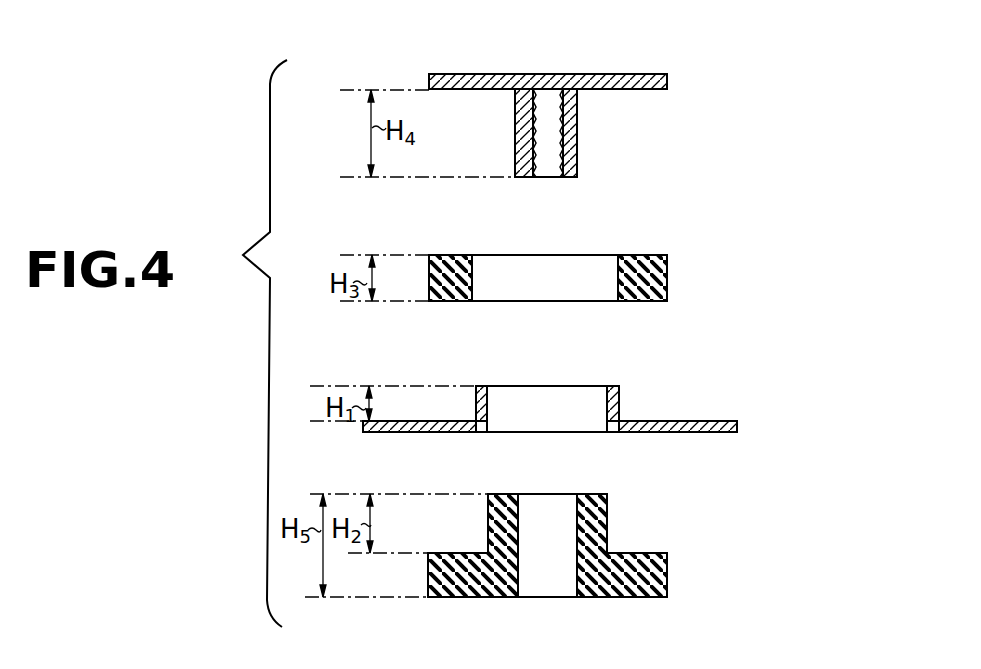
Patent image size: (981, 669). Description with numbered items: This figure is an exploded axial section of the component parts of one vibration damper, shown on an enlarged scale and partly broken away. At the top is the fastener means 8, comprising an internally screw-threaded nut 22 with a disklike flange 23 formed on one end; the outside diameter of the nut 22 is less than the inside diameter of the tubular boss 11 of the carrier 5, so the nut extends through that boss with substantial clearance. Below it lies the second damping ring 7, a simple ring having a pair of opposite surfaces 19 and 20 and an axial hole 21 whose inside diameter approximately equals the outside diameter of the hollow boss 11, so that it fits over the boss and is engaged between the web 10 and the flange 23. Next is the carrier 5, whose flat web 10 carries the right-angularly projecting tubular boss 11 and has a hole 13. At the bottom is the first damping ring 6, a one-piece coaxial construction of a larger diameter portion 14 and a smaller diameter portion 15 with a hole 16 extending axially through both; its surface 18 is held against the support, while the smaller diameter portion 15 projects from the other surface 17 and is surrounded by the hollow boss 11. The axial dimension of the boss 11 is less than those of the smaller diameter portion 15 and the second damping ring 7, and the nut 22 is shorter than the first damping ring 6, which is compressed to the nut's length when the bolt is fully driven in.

The carrier 5 is at (579, 387).
The first damping ring 6 is at (595, 573).
The second damping ring 7 is at (597, 264).
The fastener means 8 is at (597, 90).
The web 10 is at (683, 421).
The tubular boss 11 is at (622, 398).
The hole 13 is at (606, 398).
The larger diameter portion 14 is at (670, 577).
The smaller diameter portion 15 is at (610, 522).
The hole 16 is at (577, 572).
The surface 17 is at (443, 553).
The surface 18 is at (470, 597).
The surface 19 is at (655, 255).
The surface 20 is at (657, 302).
The hole 21 is at (616, 269).
The nut 22 is at (578, 128).
The flange 23 is at (612, 74).